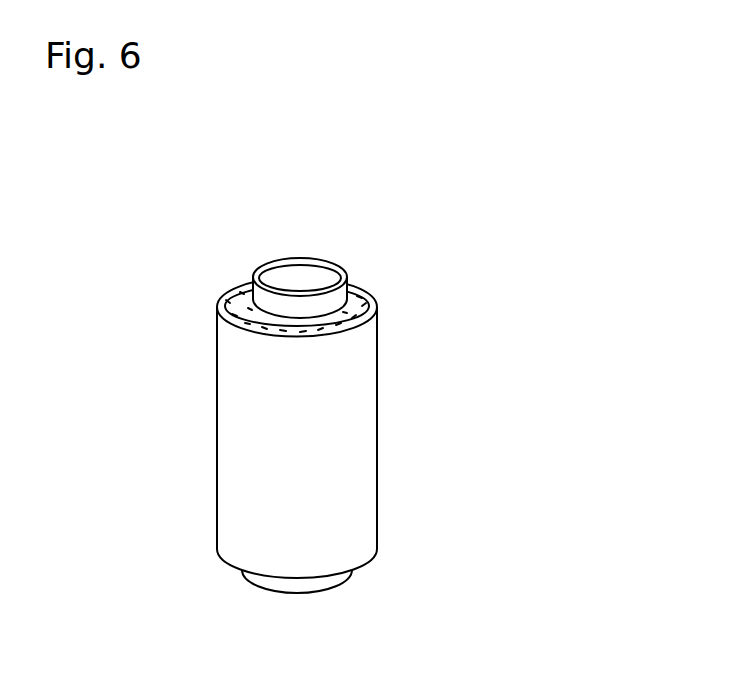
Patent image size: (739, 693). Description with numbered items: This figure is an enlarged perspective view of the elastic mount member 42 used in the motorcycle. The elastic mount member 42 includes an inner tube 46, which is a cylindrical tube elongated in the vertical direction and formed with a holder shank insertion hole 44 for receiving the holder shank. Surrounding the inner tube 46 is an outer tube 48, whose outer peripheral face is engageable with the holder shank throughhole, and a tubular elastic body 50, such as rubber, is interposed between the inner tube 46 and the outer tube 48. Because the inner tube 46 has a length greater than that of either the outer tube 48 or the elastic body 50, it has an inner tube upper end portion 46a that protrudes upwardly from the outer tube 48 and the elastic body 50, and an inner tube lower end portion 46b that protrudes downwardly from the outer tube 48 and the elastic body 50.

The elastic mount member 42 is at (468, 242).
The holder shank insertion hole 44 is at (320, 280).
The inner tube 46 is at (343, 268).
The inner tube upper end portion 46a is at (263, 300).
The inner tube lower end portion 46b is at (255, 582).
The outer tube 48 is at (357, 358).
The tubular elastic body 50 is at (355, 307).